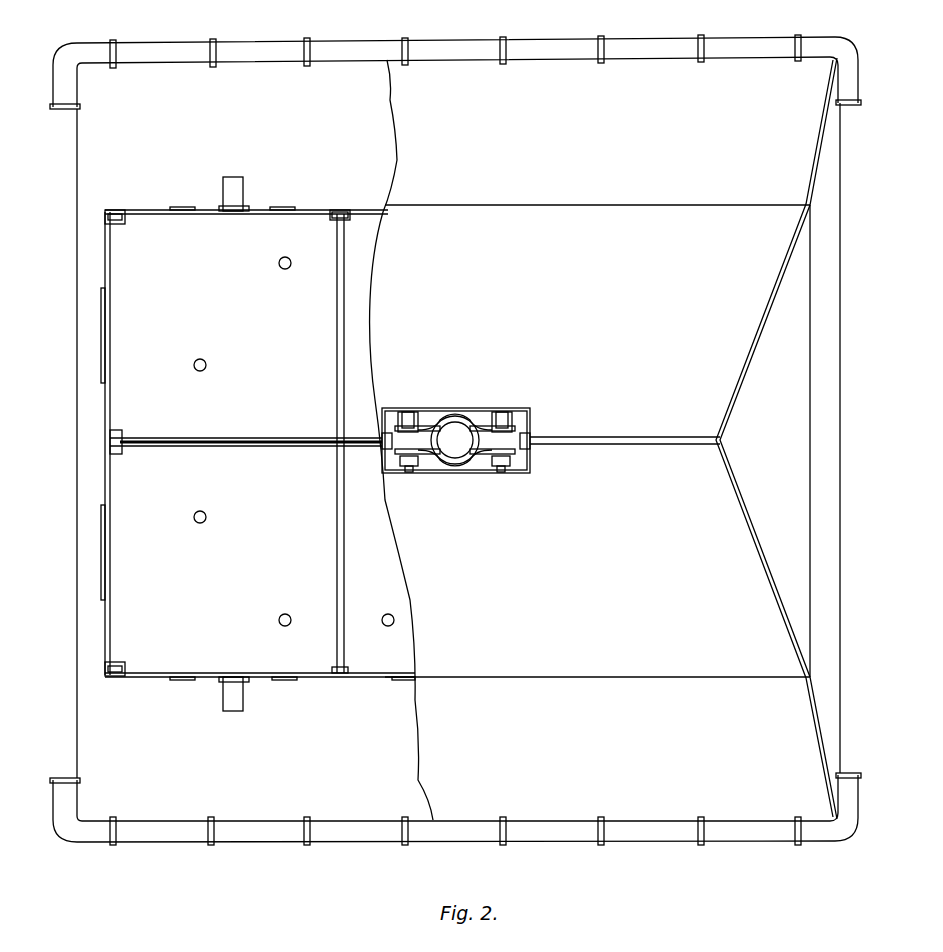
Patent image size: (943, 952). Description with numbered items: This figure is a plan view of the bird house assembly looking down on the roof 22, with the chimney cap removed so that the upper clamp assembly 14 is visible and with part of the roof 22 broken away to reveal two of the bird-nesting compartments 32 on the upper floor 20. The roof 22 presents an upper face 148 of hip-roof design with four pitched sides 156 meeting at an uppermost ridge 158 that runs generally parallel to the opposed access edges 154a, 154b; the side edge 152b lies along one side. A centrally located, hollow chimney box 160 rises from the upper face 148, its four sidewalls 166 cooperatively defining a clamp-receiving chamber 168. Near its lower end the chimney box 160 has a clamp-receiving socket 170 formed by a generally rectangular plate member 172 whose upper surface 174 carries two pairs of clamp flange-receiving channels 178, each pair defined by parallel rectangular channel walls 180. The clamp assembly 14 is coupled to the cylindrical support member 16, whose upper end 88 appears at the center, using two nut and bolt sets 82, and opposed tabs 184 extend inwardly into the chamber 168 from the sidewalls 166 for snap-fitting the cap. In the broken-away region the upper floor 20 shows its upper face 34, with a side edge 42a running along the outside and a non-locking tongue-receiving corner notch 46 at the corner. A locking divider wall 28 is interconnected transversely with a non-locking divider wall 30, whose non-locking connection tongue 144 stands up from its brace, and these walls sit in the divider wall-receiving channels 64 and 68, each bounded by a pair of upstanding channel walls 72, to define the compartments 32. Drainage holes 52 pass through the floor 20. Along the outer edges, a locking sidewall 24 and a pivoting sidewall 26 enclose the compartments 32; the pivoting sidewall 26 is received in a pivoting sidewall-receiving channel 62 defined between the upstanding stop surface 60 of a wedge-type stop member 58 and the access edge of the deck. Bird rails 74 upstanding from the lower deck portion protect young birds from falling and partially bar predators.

The clamp assembly 14 is at (528, 548).
The support member 16 is at (457, 462).
The upper floor 20 is at (108, 725).
The roof 22 is at (725, 810).
The locking sidewall 24 is at (110, 500).
The pivoting sidewall 26 is at (162, 212).
The locking divider wall 28 is at (198, 440).
The non-locking divider wall 30 is at (337, 298).
The bird-nesting compartment 32 is at (118, 315).
The upper face 34 is at (137, 812).
The side edge 42a is at (77, 254).
The non-locking tongue-receiving corner notch 46 is at (118, 226).
The drainage hole 52 is at (280, 267).
The stop member 58 is at (240, 185).
The stop surface 60 is at (243, 213).
The pivoting sidewall-receiving channel 62 is at (226, 214).
The divider wall-receiving channel 64 is at (335, 214).
The divider wall-receiving channel 68 is at (150, 438).
The channel wall 72 is at (345, 262).
The bird rail 74 is at (152, 42).
The nut and bolt set 82 is at (530, 446).
The upper end 88 is at (445, 448).
The non-locking connection tongue 144 is at (348, 214).
The upper face 148 is at (650, 206).
The side edge 152b is at (840, 575).
The access edge 154a is at (660, 835).
The access edge 154b is at (640, 48).
The pitched side 156 is at (642, 304).
The ridge 158 is at (665, 440).
The chimney box 160 is at (530, 412).
The sidewall 166 is at (395, 432).
The clamp-receiving chamber 168 is at (387, 466).
The clamp-receiving socket 170 is at (448, 425).
The plate member 172 is at (408, 420).
The upper surface 174 is at (502, 420).
The clamp flange-receiving channel 178 is at (492, 426).
The channel wall 180 is at (410, 422).
The tab 184 is at (387, 448).